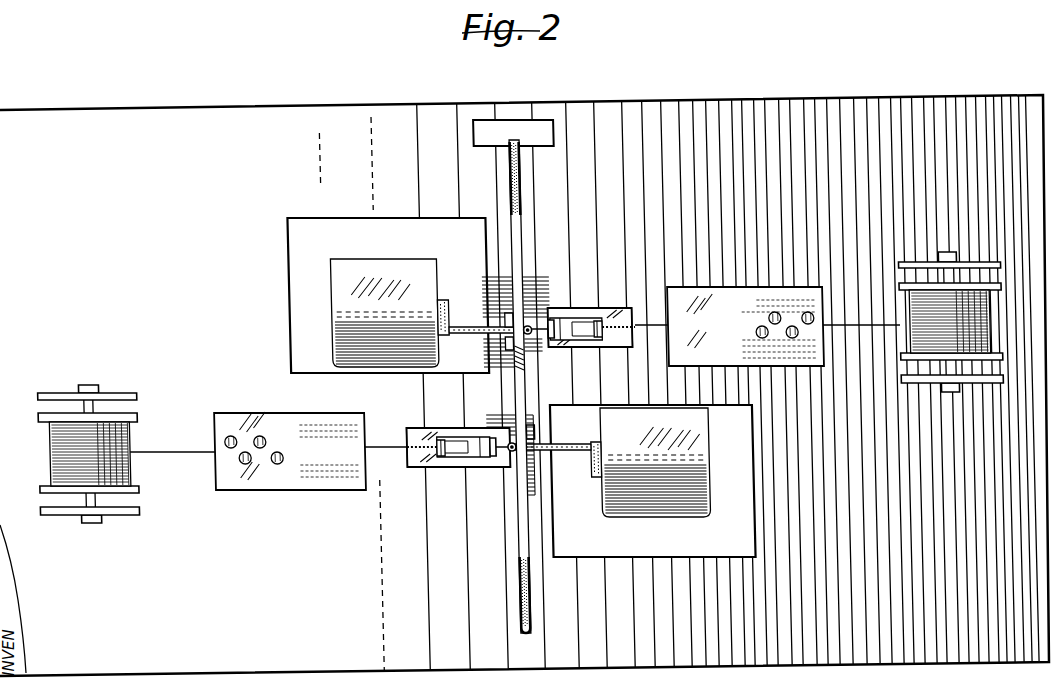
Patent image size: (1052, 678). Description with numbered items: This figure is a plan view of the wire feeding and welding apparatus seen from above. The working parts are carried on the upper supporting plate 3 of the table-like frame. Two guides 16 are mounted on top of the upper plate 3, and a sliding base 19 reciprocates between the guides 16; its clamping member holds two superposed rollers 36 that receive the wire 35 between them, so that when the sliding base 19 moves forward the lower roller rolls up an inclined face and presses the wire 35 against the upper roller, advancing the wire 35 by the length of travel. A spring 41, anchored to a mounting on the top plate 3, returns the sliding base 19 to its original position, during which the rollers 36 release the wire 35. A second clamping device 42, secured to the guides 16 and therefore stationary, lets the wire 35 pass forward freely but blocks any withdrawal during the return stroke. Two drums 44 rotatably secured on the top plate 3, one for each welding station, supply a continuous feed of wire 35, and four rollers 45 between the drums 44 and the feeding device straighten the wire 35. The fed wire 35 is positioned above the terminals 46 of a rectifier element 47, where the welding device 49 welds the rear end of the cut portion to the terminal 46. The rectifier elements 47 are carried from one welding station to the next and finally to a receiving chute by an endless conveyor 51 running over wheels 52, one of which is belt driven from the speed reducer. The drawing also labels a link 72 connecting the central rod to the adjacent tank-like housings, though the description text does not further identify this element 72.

The upper supporting plate 3 is at (614, 309).
The guides 16 is at (591, 318).
The sliding base 19 is at (602, 338).
The wire 35 is at (538, 291).
The rollers 36 is at (640, 330).
The spring 41 is at (630, 332).
The second clamping device 42 is at (562, 318).
The drums 44 is at (913, 312).
The rollers 45 is at (811, 324).
The terminals 46 is at (536, 486).
The rectifier element 47 is at (530, 362).
The welding device 49 is at (476, 325).
The endless conveyor 51 is at (528, 233).
The wheels 52 is at (528, 171).
The link 72 is at (466, 334).